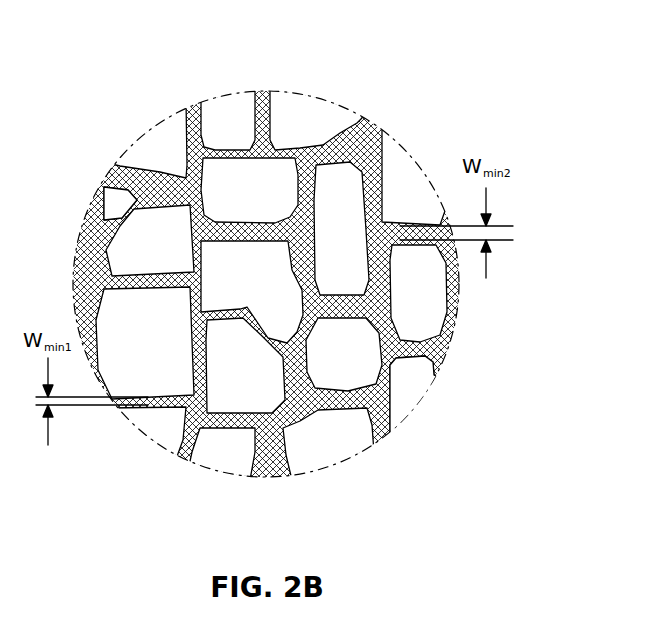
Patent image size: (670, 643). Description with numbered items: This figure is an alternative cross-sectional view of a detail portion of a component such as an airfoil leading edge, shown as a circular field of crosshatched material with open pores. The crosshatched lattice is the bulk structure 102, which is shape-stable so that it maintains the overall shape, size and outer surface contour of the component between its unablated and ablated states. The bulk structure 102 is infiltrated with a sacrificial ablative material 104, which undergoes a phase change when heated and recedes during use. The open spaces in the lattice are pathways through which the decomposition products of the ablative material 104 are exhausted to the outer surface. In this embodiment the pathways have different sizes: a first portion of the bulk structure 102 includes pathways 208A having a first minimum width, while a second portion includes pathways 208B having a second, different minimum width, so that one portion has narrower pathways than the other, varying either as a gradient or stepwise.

The bulk structure 102 is at (262, 363).
The sacrificial ablative material 104 is at (258, 100).
The pathways 208A is at (62, 208).
The pathways 208B is at (458, 358).